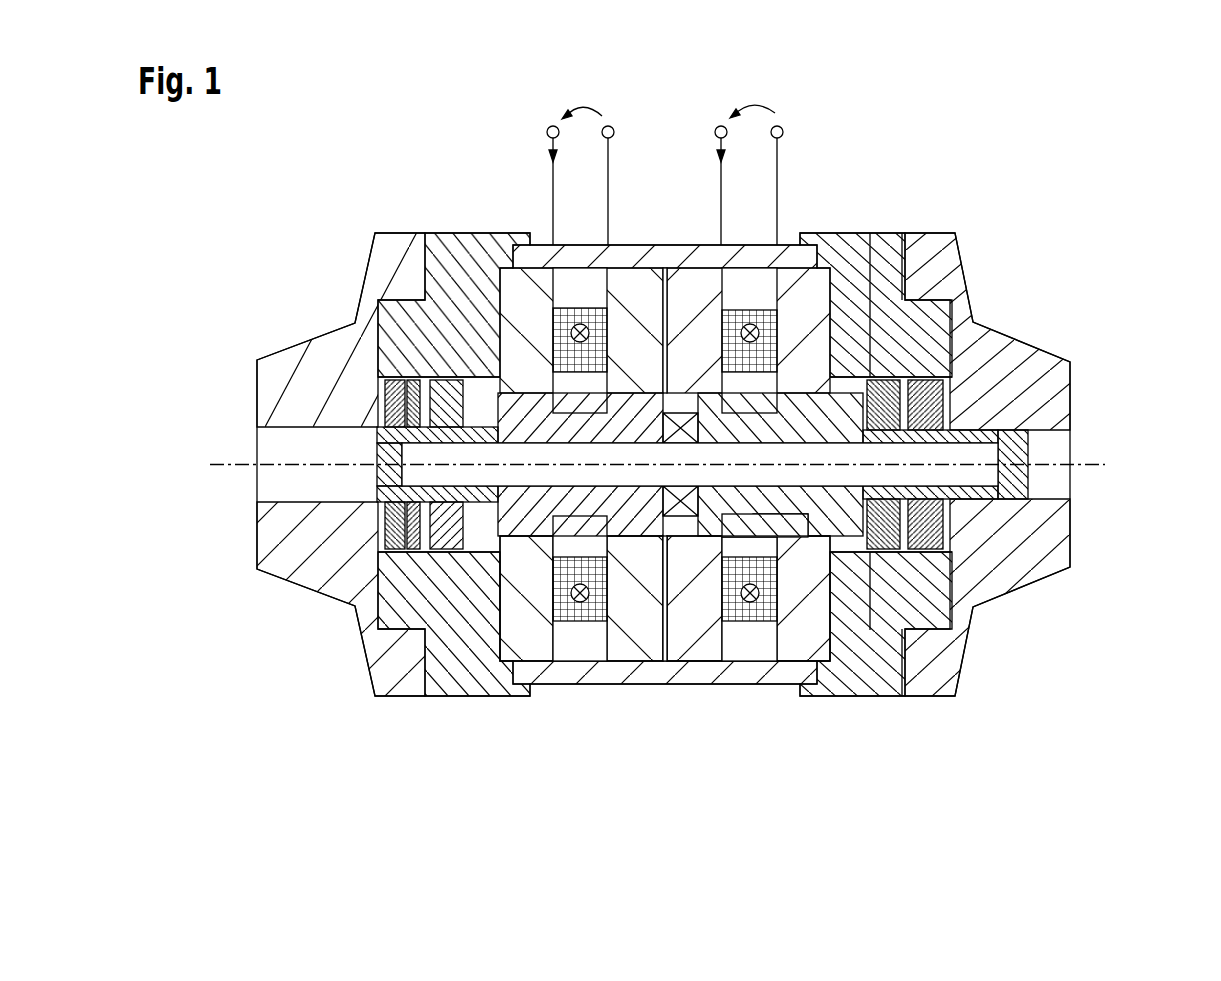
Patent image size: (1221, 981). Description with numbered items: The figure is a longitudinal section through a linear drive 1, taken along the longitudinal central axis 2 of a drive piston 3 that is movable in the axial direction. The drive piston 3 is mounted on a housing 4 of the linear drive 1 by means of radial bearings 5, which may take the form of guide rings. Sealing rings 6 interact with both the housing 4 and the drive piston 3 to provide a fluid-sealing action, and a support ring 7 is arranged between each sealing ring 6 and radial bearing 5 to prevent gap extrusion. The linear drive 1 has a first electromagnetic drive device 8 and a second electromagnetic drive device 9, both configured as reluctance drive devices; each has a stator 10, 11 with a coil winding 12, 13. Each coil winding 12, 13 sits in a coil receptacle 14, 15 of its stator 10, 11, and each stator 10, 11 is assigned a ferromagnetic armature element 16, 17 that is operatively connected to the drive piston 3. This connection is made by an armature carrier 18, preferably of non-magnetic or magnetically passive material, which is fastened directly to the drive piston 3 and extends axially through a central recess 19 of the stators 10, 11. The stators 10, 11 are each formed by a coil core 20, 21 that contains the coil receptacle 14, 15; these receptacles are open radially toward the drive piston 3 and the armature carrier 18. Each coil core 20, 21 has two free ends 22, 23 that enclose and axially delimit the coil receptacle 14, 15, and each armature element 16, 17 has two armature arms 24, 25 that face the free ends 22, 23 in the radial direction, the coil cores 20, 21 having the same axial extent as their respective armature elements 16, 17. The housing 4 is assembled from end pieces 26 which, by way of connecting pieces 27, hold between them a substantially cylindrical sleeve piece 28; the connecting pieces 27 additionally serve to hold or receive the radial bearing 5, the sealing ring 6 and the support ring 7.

The linear drive 1 is at (1069, 158).
The longitudinal central axis 2 is at (1060, 464).
The drive piston 3 is at (1000, 497).
The housing 4 is at (284, 240).
The radial bearing 5 is at (443, 407).
The sealing ring 6 is at (946, 402).
The support ring 7 is at (915, 356).
The first electromagnetic drive device 8 is at (520, 216).
The second electromagnetic drive device 9 is at (792, 213).
The stator 10 is at (628, 290).
The stator 11 is at (815, 300).
The coil winding 12 is at (572, 306).
The coil winding 13 is at (745, 308).
The coil receptacle 14 is at (570, 560).
The coil receptacle 15 is at (756, 580).
The armature element 16 is at (595, 530).
The armature element 17 is at (805, 688).
The armature carrier 18 is at (975, 450).
The central recess 19 is at (679, 300).
The coil core 20 is at (456, 242).
The coil core 21 is at (868, 310).
The free end 22 is at (540, 505).
The free end 23 is at (640, 505).
The armature arm 24 is at (518, 560).
The armature arm 25 is at (640, 570).
The end piece 26 is at (280, 392).
The connecting piece 27 is at (395, 602).
The sleeve piece 28 is at (775, 686).